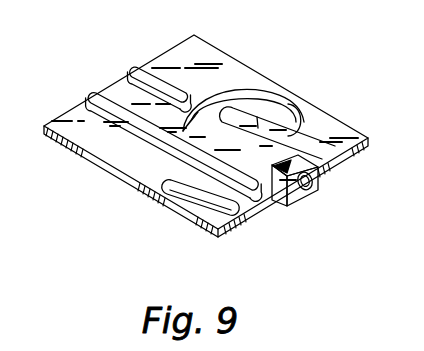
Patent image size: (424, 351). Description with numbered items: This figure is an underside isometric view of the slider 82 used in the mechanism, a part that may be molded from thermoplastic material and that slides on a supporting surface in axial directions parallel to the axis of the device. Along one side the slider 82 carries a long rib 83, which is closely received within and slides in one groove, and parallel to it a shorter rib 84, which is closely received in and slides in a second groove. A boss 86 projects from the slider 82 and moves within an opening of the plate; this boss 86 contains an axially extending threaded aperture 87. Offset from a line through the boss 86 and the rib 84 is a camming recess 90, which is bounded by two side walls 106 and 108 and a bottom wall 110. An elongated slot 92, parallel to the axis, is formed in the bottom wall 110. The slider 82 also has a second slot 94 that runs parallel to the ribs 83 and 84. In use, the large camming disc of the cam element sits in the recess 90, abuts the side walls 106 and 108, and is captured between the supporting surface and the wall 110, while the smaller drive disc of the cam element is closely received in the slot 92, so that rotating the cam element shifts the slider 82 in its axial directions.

The slider 82 is at (246, 63).
The rib 83 is at (95, 93).
The rib 84 is at (137, 69).
The boss 86 is at (317, 183).
The threaded aperture 87 is at (310, 189).
The camming recess 90 is at (286, 116).
The elongated slot 92 is at (284, 92).
The second slot 94 is at (187, 204).
The side wall 106 is at (211, 104).
The side wall 108 is at (313, 118).
The bottom wall 110 is at (272, 199).